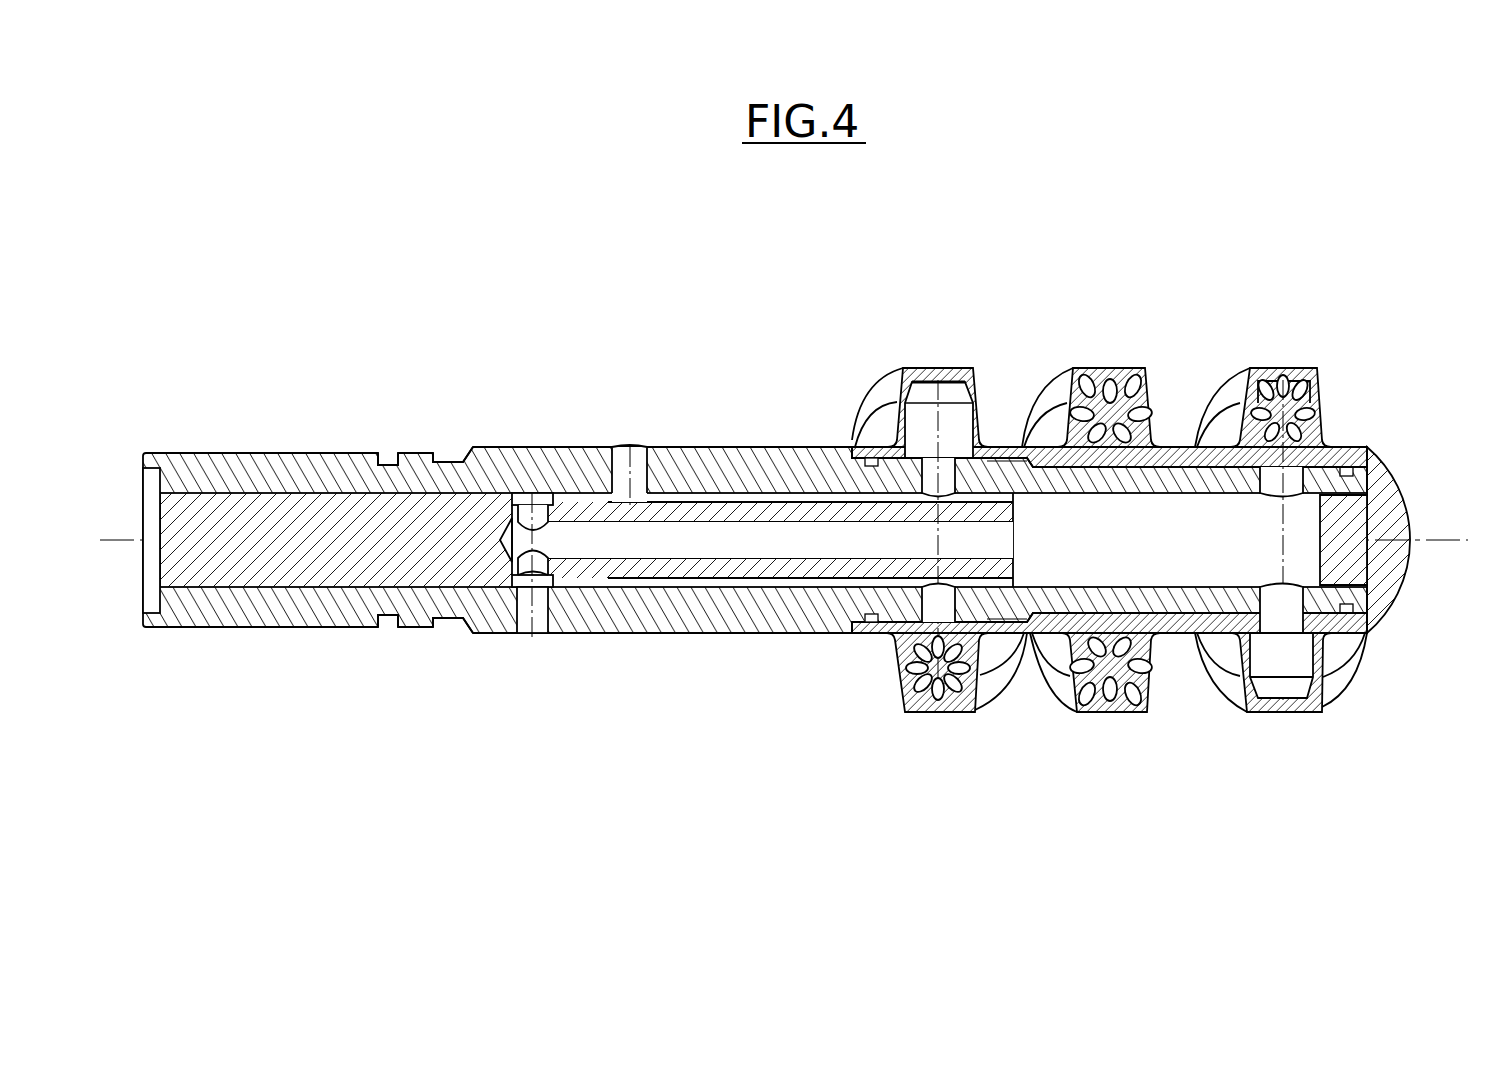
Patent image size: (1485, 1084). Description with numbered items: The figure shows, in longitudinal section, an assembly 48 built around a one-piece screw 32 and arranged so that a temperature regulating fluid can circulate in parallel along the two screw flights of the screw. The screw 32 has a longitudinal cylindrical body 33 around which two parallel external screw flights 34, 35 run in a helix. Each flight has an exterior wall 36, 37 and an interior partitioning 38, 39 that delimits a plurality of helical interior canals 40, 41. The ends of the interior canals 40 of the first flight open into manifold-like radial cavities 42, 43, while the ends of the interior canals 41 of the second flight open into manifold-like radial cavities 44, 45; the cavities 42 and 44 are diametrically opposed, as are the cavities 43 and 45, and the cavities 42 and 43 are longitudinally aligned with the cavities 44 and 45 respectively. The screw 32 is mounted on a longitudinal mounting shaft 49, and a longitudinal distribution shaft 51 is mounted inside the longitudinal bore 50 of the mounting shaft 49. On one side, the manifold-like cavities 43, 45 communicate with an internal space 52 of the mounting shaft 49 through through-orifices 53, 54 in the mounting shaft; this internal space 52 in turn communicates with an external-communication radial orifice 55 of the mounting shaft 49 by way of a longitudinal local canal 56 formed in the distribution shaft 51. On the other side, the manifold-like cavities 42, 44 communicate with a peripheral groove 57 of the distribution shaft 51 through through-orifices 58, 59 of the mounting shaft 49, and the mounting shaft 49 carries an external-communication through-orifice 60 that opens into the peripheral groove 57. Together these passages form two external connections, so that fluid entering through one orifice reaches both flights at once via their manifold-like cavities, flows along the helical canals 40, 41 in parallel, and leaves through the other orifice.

The one-piece screw 32 is at (850, 351).
The longitudinal cylindrical body 33 is at (1350, 460).
The screw flight 34 is at (1053, 376).
The screw flight 35 is at (1166, 706).
The exterior wall 36 is at (1150, 412).
The exterior wall 37 is at (1068, 665).
The interior partitioning 38 is at (1113, 386).
The interior partitioning 39 is at (1106, 697).
The helical interior canals 40 is at (1087, 390).
The helical interior canals 41 is at (1135, 695).
The manifold-like radial cavity 42 is at (905, 652).
The manifold-like radial cavity 43 is at (1268, 665).
The manifold-like radial cavity 44 is at (955, 420).
The manifold-like radial cavity 45 is at (1302, 455).
The assembly 48 is at (695, 374).
The longitudinal mounting shaft 49 is at (446, 452).
The longitudinal bore 50 is at (284, 575).
The longitudinal distribution shaft 51 is at (283, 500).
The internal space 52 is at (1205, 558).
The through-orifice 53 is at (1290, 593).
The through-orifice 54 is at (1290, 487).
The external-communication radial orifice 55 is at (529, 620).
The longitudinal local canal 56 is at (676, 550).
The peripheral groove 57 is at (709, 500).
The through-orifice 58 is at (930, 603).
The through-orifice 59 is at (930, 478).
The external-communication through-orifice 60 is at (620, 448).